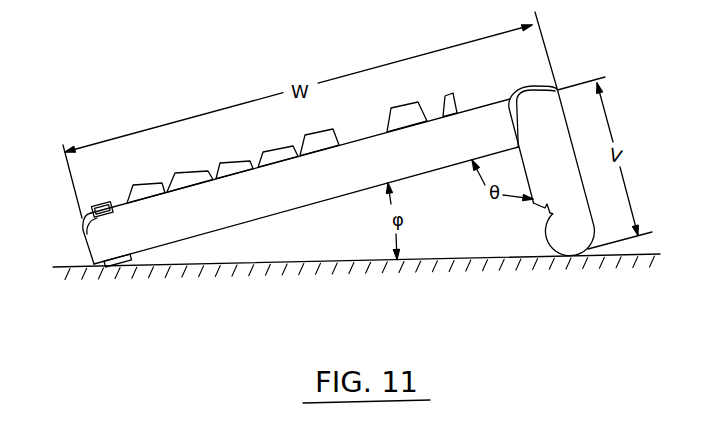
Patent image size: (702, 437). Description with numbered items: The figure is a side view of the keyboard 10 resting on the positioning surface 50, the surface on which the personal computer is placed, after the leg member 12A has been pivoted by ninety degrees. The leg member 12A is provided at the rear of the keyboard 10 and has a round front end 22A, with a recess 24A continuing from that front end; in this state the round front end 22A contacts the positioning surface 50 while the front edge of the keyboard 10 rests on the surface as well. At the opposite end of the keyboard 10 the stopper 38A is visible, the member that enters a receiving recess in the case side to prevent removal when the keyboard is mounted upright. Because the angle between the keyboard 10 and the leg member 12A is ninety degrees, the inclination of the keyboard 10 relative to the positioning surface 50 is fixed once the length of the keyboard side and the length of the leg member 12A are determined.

The keyboard 10 is at (257, 208).
The leg member 12A is at (557, 89).
The round front end 22A is at (570, 239).
The recess 24A is at (548, 210).
The stopper 38A is at (84, 233).
The positioning surface 50 is at (373, 262).